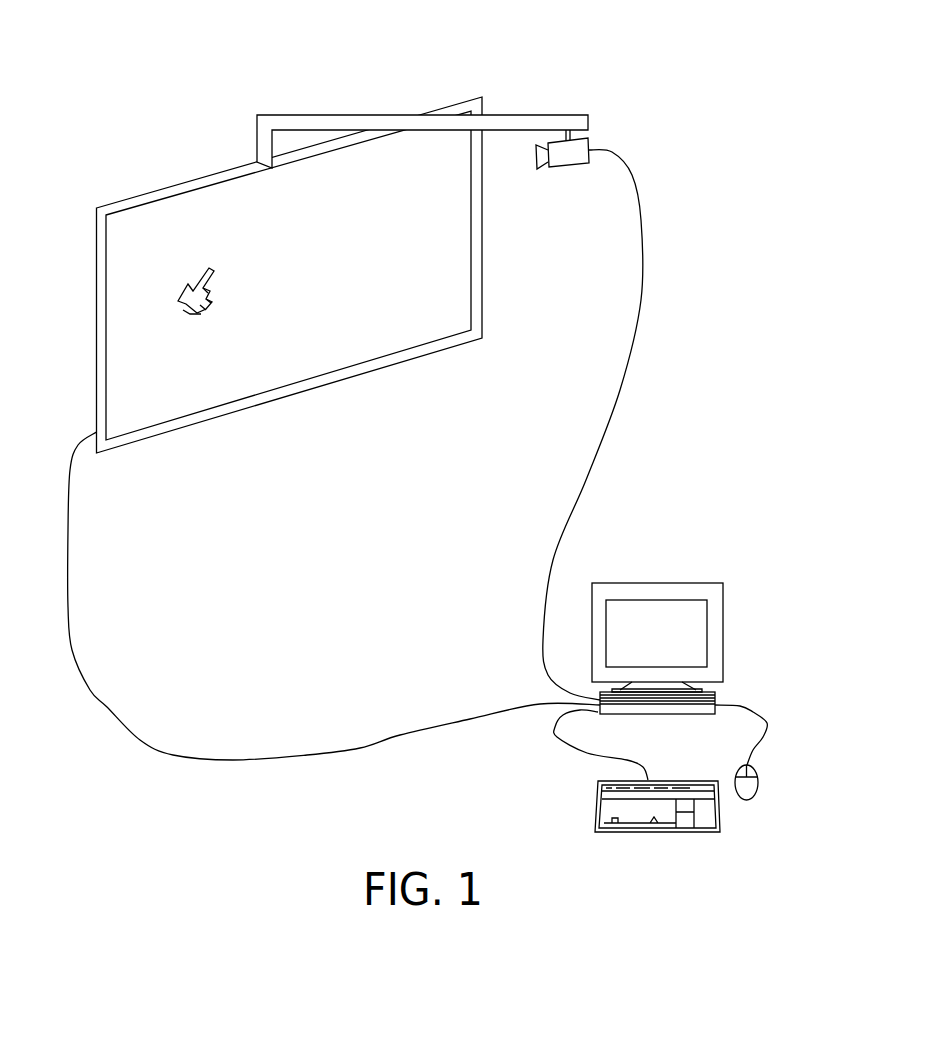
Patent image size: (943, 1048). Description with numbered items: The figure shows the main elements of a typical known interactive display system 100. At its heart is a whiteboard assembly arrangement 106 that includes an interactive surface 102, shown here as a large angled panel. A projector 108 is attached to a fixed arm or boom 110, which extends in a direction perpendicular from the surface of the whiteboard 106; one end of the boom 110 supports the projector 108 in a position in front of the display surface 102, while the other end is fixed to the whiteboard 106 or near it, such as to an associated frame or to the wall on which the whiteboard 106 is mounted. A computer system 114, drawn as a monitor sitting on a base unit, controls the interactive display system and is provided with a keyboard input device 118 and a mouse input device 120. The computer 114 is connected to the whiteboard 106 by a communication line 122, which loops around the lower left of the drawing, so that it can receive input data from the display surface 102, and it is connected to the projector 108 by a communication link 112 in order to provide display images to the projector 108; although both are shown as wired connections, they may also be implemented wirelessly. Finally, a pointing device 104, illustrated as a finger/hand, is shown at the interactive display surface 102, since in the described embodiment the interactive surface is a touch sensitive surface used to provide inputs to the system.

The interactive display system 100 is at (678, 76).
The interactive surface 102 is at (172, 387).
The pointing device 104 is at (203, 307).
The whiteboard assembly arrangement 106 is at (96, 235).
The projector 108 is at (573, 167).
The boom 110 is at (530, 122).
The communication link 112 is at (620, 388).
The computer system 114 is at (677, 715).
The keyboard input device 118 is at (597, 800).
The mouse input device 120 is at (758, 786).
The communication line 122 is at (360, 747).